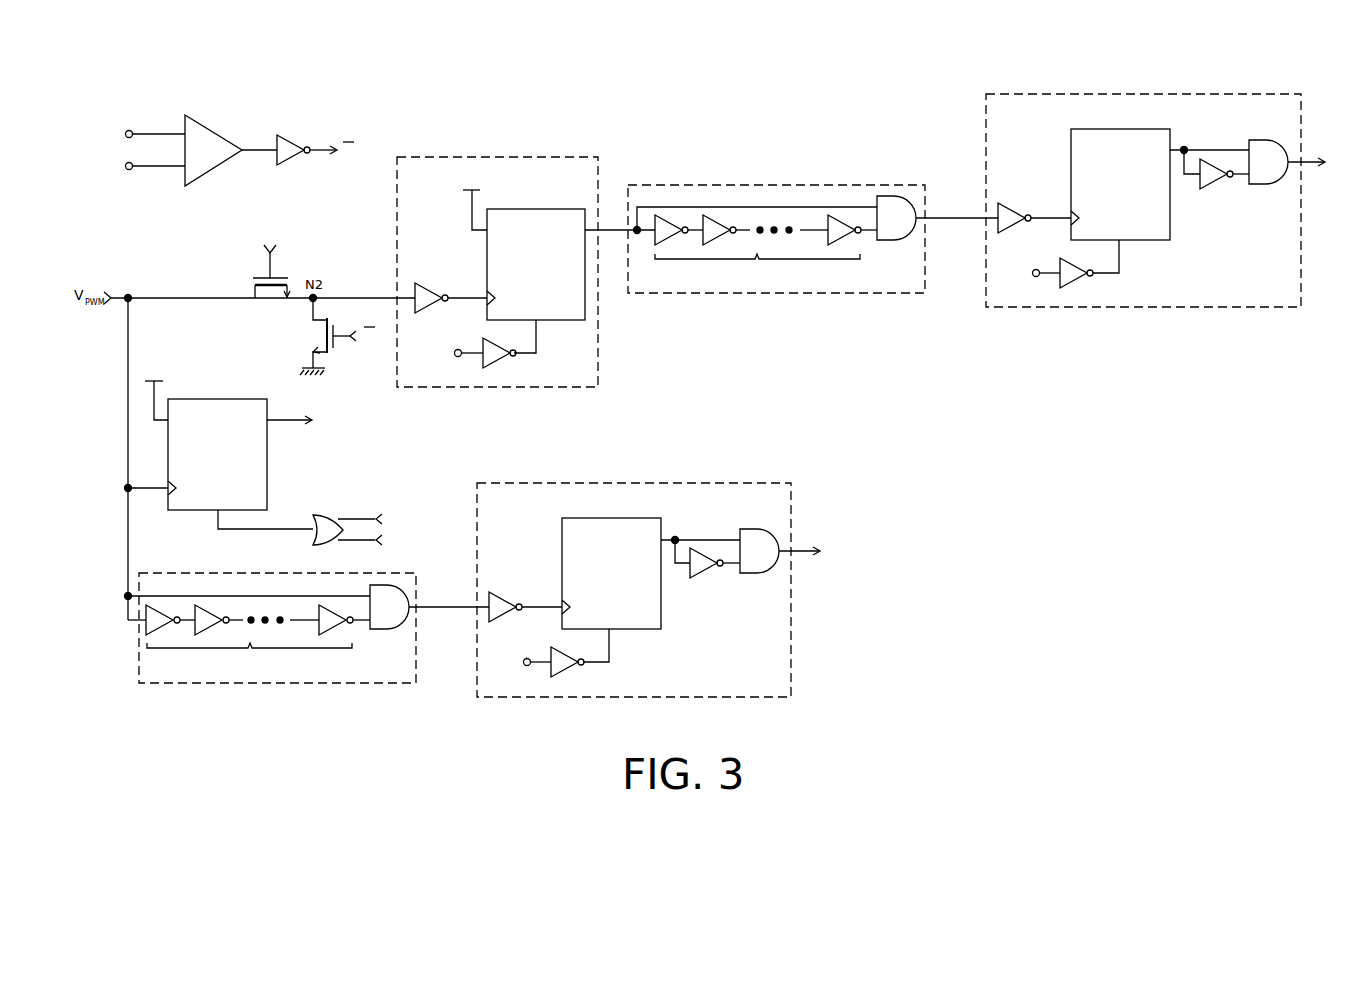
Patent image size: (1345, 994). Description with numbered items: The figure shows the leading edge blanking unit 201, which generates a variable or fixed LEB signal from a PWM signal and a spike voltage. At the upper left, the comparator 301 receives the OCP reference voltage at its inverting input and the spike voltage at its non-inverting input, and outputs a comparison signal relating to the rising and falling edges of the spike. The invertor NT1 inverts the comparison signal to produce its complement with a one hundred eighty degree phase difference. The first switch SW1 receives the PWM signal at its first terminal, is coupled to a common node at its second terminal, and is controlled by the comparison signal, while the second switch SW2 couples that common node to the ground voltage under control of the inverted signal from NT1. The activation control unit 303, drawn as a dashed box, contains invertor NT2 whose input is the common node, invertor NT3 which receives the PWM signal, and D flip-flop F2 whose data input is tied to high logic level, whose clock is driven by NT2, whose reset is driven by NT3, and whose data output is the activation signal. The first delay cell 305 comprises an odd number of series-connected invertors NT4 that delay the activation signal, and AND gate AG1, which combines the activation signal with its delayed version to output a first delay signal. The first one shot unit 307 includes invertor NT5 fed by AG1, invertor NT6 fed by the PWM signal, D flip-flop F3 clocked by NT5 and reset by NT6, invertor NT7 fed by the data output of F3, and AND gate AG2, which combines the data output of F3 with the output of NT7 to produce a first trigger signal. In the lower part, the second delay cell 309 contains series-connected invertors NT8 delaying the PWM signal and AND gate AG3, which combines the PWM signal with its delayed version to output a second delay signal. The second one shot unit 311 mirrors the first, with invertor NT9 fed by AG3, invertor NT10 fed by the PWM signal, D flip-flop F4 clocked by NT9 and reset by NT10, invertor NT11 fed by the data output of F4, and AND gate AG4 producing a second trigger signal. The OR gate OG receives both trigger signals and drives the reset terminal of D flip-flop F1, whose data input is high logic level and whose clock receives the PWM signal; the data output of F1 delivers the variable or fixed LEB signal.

The leading edge blanking unit 201 is at (1251, 731).
The comparator 301 is at (216, 133).
The activation control unit 303 is at (505, 157).
The first delay cell 305 is at (724, 186).
The first one shot unit 307 is at (1092, 94).
The second delay cell 309 is at (213, 577).
The second one shot unit 311 is at (583, 483).
The invertor NT1 is at (291, 142).
The invertor NT2 is at (430, 292).
The invertor NT3 is at (500, 366).
The invertors NT4 is at (756, 247).
The invertor NT5 is at (1012, 211).
The invertor NT6 is at (1078, 285).
The invertor NT7 is at (1216, 187).
The invertors NT8 is at (258, 641).
The invertor NT9 is at (503, 600).
The invertor NT10 is at (568, 674).
The invertor NT11 is at (708, 576).
The AND gate AG1 is at (892, 240).
The AND gate AG2 is at (1266, 184).
The AND gate AG3 is at (385, 629).
The AND gate AG4 is at (757, 573).
The D flip-flop F1 is at (222, 399).
The D flip-flop F2 is at (540, 209).
The D flip-flop F3 is at (1122, 129).
The D flip-flop F4 is at (612, 518).
The OR gate OG is at (318, 515).
The first switch SW1 is at (271, 272).
The second switch SW2 is at (332, 346).